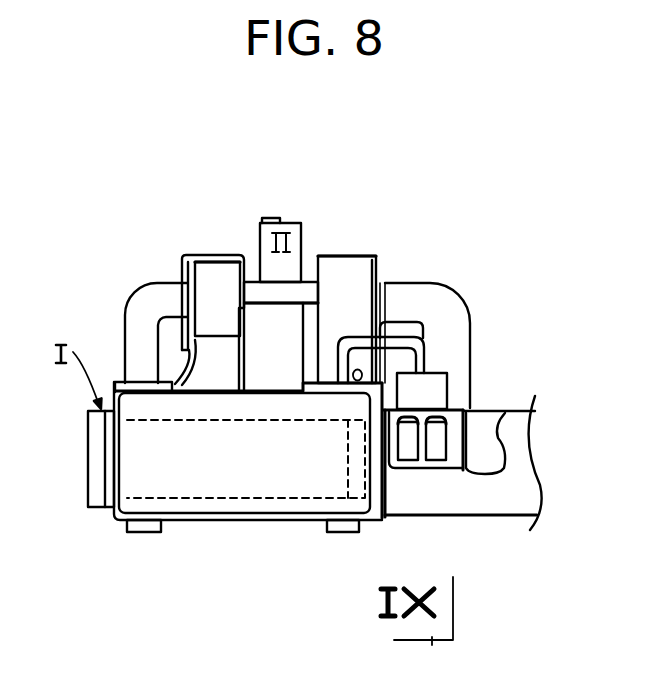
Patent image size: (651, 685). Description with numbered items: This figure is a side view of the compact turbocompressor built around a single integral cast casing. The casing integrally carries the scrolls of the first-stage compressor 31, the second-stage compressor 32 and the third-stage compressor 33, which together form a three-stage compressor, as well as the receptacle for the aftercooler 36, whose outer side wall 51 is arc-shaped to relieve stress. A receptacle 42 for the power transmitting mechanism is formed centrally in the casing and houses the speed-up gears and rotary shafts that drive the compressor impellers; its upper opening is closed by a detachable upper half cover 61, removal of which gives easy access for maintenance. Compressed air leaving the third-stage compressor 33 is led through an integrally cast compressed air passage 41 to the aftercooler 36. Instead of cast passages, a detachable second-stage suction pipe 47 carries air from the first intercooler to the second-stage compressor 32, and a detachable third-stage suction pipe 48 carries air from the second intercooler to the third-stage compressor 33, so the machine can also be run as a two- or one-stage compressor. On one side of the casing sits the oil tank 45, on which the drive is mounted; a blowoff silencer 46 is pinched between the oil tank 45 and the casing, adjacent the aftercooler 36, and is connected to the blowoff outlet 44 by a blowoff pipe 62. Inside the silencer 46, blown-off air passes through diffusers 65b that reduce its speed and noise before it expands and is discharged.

The first-stage compressor 31 is at (193, 252).
The second-stage compressor 32 is at (346, 254).
The third-stage compressor 33 is at (224, 266).
The aftercooler 36 is at (195, 487).
The compressed air passage 41 is at (203, 370).
The receptacle for power transmitting mechanism 42 is at (295, 311).
The blowoff outlet 44 is at (360, 383).
The oil tank 45 is at (490, 417).
The blowoff silencer 46 is at (457, 404).
The second-stage suction pipe 47 is at (452, 287).
The third-stage suction pipe 48 is at (140, 283).
The outer side wall 51 is at (241, 482).
The upper half cover 61 is at (293, 235).
The blowoff pipe 62 is at (401, 337).
The diffusers 65b is at (433, 455).